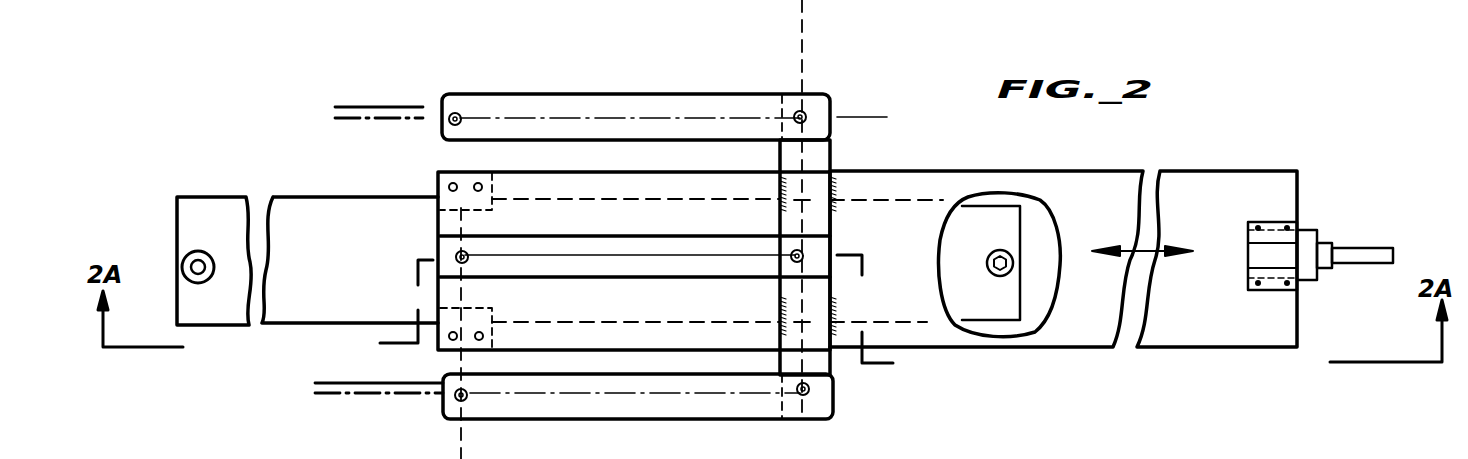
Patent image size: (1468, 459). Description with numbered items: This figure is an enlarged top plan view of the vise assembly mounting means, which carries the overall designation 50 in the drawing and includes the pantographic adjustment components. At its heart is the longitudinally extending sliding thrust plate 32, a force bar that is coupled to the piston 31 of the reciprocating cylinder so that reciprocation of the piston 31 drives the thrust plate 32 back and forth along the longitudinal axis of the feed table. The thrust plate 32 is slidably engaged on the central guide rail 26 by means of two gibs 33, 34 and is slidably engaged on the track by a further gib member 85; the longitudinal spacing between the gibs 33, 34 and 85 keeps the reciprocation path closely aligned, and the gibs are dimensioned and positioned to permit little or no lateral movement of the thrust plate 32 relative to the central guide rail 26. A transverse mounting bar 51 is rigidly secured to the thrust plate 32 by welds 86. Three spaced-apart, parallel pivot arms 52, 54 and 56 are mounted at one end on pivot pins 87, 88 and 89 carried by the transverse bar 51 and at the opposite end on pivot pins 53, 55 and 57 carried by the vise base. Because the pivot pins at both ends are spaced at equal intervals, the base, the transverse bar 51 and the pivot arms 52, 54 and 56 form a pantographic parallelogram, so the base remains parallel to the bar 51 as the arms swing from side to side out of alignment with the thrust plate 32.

The central guide rail 26 is at (315, 313).
The piston 31 is at (1370, 250).
The sliding thrust plate 32 is at (1163, 338).
The gib 33 is at (493, 310).
The gib 34 is at (433, 215).
The assembly 50 is at (897, 419).
The transverse mounting bar 51 is at (828, 225).
The pivot arm 52 is at (638, 418).
The pivot pin 53 is at (456, 398).
The pivot arm 54 is at (503, 248).
The pivot pin 55 is at (458, 261).
The pivot arm 56 is at (613, 95).
The pivot pin 57 is at (451, 114).
The gib member 85 is at (1277, 288).
The welds 86 is at (777, 183).
The pivot pin 87 is at (803, 396).
The pivot pin 88 is at (804, 257).
The pivot pin 89 is at (803, 112).